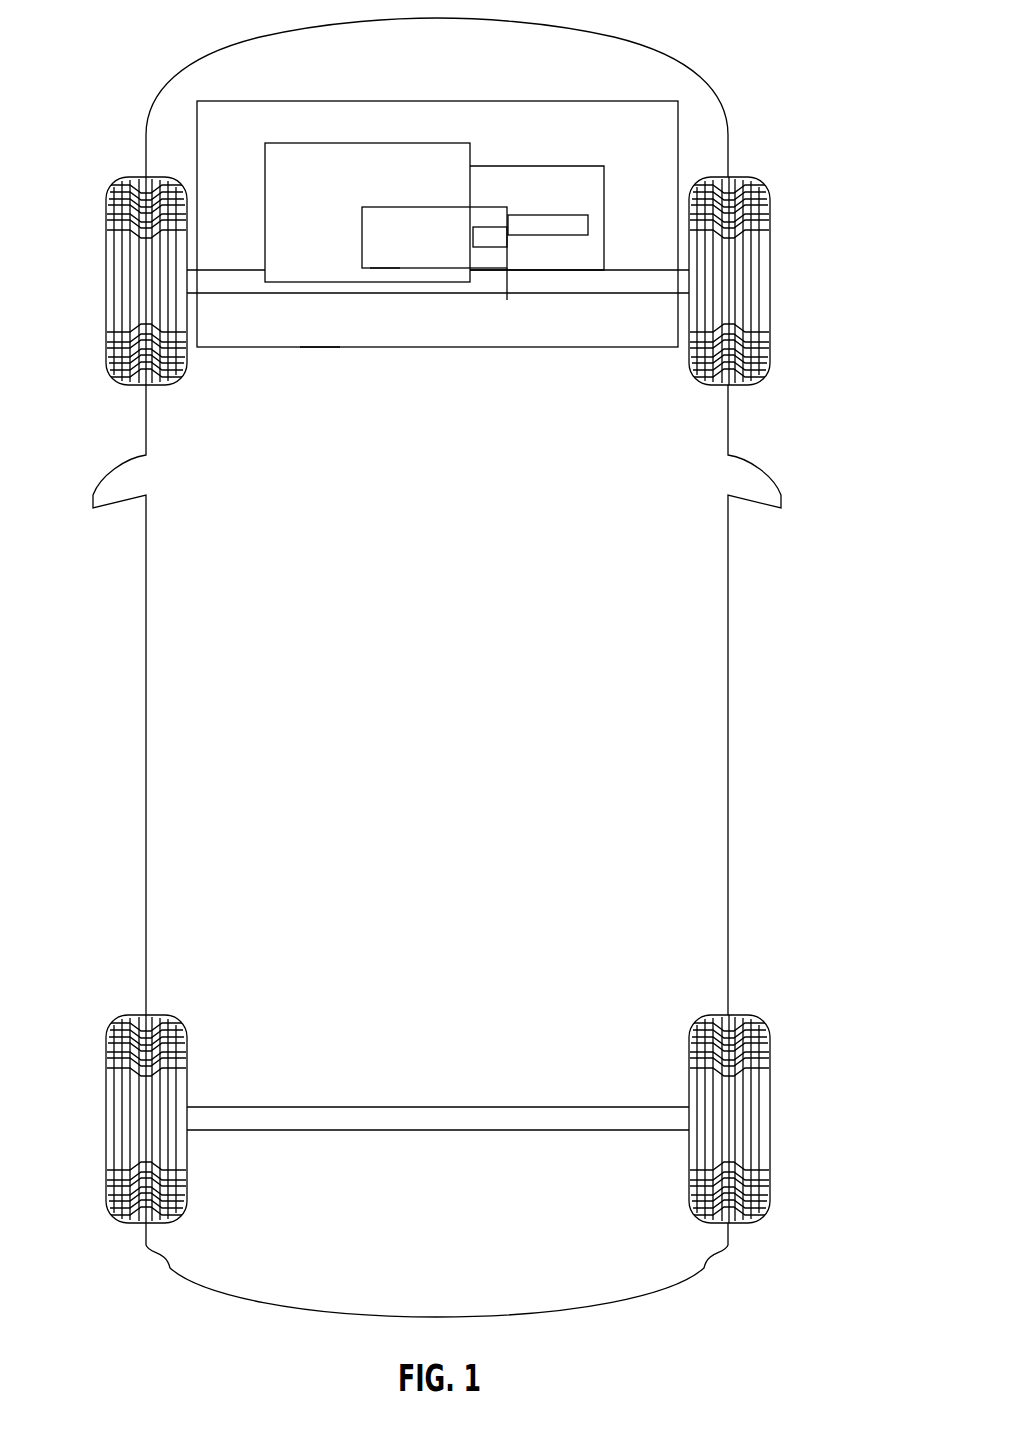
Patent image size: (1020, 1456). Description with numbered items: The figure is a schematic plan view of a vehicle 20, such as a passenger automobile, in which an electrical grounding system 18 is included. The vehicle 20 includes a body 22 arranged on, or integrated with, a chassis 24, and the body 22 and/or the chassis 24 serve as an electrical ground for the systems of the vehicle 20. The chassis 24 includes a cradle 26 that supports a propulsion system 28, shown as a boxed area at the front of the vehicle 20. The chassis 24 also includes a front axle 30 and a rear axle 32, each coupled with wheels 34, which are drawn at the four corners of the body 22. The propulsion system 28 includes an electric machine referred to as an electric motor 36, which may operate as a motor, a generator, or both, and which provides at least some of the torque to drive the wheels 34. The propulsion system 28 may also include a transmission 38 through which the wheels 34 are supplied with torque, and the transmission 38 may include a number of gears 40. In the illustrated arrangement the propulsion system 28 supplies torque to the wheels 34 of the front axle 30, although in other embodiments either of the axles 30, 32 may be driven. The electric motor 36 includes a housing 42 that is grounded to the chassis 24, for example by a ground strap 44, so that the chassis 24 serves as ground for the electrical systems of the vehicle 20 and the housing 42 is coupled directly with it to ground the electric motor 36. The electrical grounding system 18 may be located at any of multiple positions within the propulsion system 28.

The electrical grounding system 18 is at (476, 245).
The vehicle 20 is at (689, 52).
The body 22 is at (145, 757).
The chassis 24 is at (352, 97).
The cradle 26 is at (318, 338).
The propulsion system 28 is at (562, 152).
The front axle 30 is at (226, 282).
The rear axle 32 is at (438, 1130).
The wheels 34 is at (105, 283).
The electric motor 36 is at (407, 252).
The transmission 38 is at (573, 258).
The gears 40 is at (588, 225).
The housing 42 is at (385, 257).
The ground strap 44 is at (507, 300).